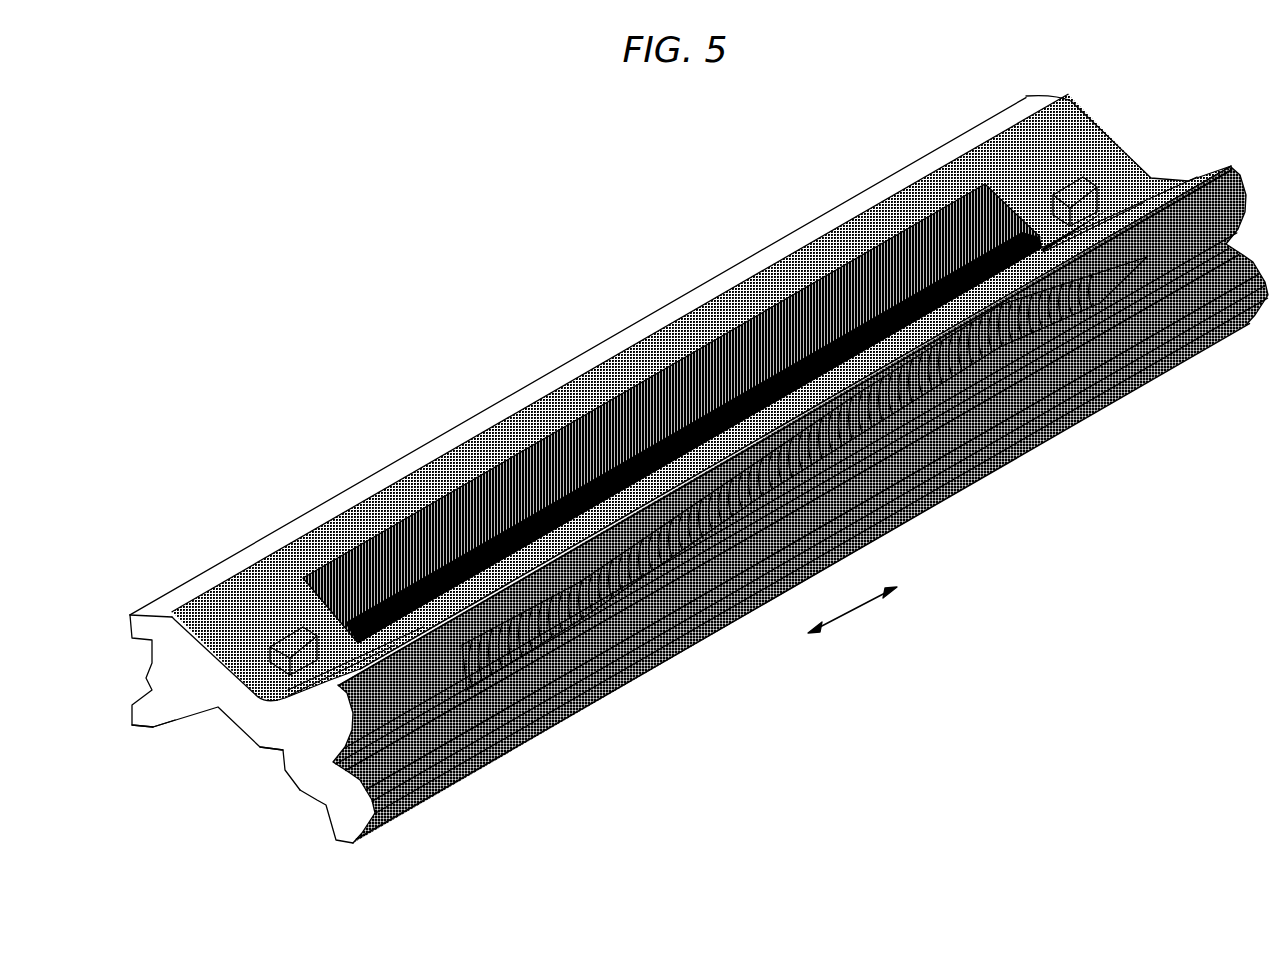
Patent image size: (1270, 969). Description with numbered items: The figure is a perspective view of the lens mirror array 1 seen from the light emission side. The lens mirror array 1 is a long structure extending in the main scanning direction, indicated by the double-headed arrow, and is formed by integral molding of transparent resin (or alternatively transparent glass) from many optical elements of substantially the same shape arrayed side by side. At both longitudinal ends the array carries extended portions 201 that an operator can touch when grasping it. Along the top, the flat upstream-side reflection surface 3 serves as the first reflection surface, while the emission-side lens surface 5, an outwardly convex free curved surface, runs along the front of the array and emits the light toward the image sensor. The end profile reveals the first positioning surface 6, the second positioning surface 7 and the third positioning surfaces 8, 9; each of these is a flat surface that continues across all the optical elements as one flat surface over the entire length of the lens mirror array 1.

The lens mirror array 1 is at (556, 278).
The upstream-side reflection surface 3 is at (300, 590).
The emission-side lens surface 5 is at (540, 615).
The first positioning surface 6 is at (155, 728).
The second positioning surface 7 is at (272, 753).
The third positioning surface 8 is at (132, 722).
The third positioning surface 9 is at (310, 800).
The extended portion 201 is at (1118, 152).